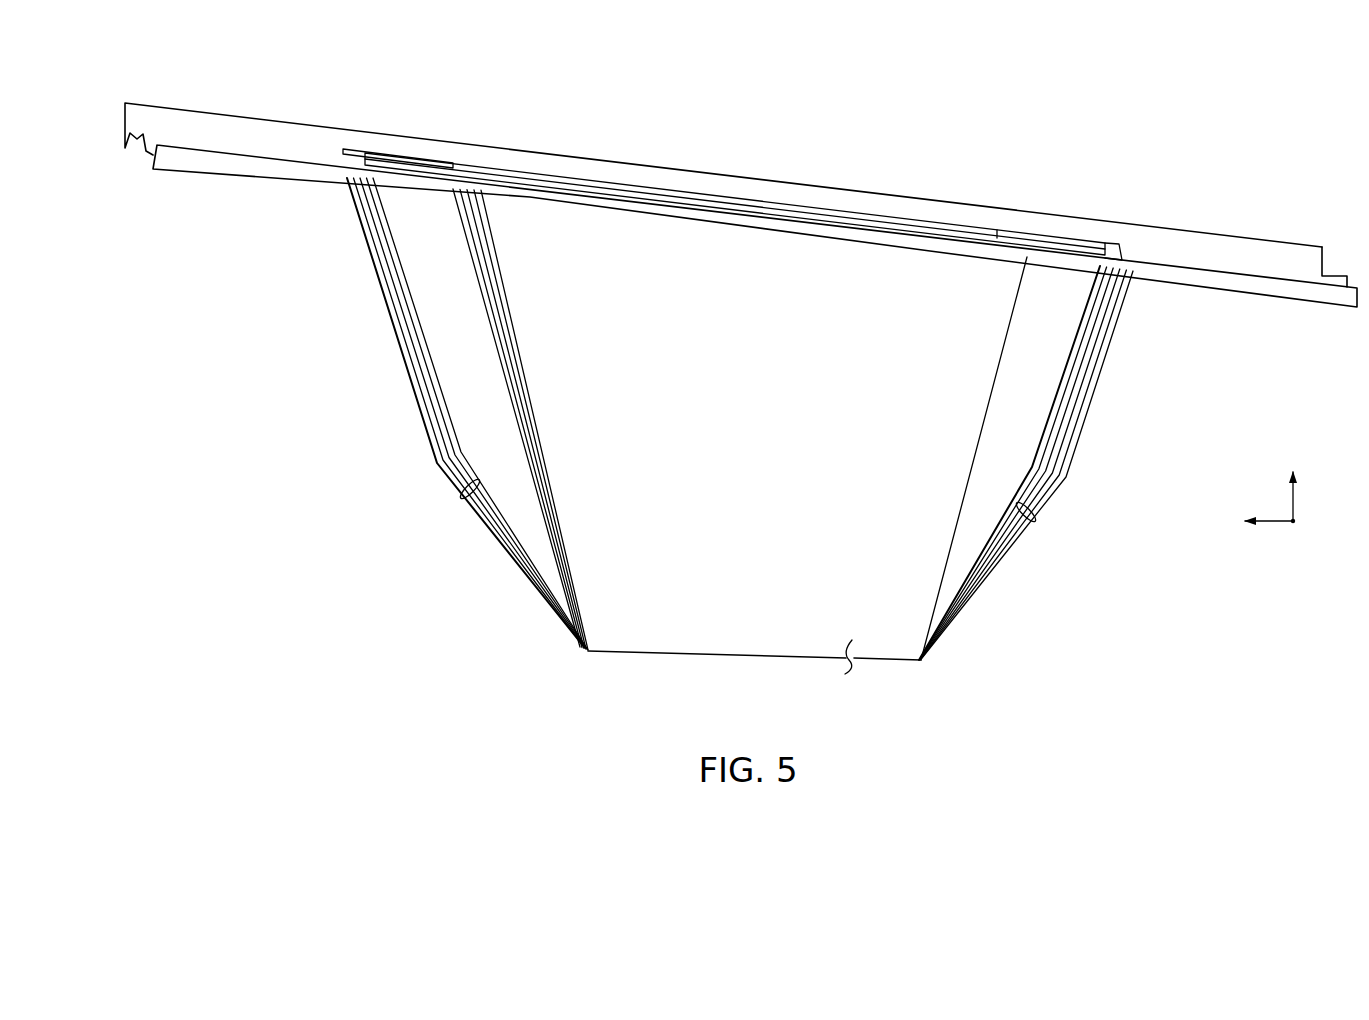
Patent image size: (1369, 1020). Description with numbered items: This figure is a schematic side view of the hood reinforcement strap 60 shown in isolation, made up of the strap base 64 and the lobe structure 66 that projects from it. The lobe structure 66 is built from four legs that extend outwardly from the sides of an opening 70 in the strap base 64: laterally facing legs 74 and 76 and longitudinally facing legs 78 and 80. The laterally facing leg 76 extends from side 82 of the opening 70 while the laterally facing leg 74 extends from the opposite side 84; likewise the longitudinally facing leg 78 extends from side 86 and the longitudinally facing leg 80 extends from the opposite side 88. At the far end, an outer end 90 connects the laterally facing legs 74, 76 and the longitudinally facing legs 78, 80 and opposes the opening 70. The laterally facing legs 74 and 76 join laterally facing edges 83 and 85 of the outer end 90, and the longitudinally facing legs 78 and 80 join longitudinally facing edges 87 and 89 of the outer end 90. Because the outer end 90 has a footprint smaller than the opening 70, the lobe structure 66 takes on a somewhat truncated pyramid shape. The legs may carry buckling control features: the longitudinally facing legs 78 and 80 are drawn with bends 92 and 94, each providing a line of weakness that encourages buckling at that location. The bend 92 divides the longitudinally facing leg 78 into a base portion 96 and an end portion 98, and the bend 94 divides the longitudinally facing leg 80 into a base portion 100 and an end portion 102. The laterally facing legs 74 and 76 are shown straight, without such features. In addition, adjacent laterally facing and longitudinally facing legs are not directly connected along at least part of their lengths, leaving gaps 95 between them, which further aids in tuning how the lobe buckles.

The hood reinforcement strap 60 is at (1098, 126).
The strap base 64 is at (1224, 246).
The lobe structure 66 is at (340, 395).
The opening 70 is at (640, 168).
The laterally facing leg 74 is at (470, 289).
The laterally facing leg 76 is at (863, 670).
The longitudinally facing leg 78 is at (427, 437).
The longitudinally facing leg 80 is at (1093, 425).
The side of the opening 82 is at (1030, 238).
The laterally facing edge 83 is at (562, 632).
The side of the opening 84 is at (787, 200).
The laterally facing edge 85 is at (757, 660).
The side of the opening 86 is at (372, 148).
The longitudinally facing edge 87 is at (589, 653).
The side of the opening 88 is at (1114, 244).
The longitudinally facing edge 89 is at (925, 661).
The outer end 90 is at (645, 660).
The bend 92 is at (440, 462).
The bend 94 is at (1072, 475).
The gap 95 is at (493, 458).
The base portion 96 is at (353, 318).
The end portion 98 is at (472, 542).
The base portion 100 is at (1127, 375).
The end portion 102 is at (1017, 567).